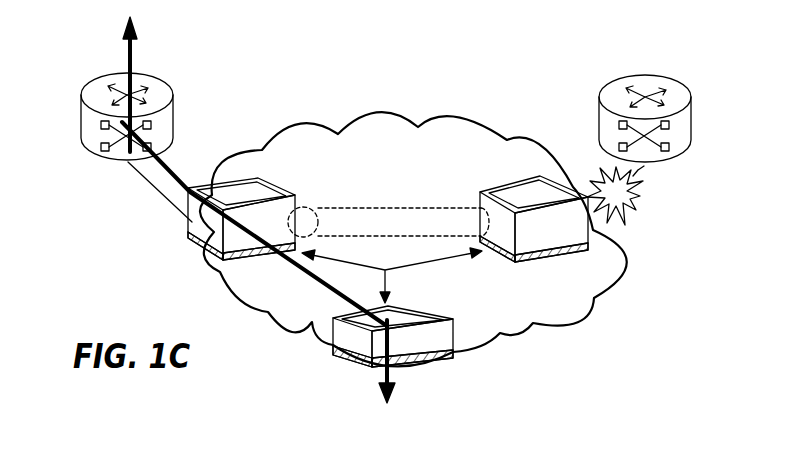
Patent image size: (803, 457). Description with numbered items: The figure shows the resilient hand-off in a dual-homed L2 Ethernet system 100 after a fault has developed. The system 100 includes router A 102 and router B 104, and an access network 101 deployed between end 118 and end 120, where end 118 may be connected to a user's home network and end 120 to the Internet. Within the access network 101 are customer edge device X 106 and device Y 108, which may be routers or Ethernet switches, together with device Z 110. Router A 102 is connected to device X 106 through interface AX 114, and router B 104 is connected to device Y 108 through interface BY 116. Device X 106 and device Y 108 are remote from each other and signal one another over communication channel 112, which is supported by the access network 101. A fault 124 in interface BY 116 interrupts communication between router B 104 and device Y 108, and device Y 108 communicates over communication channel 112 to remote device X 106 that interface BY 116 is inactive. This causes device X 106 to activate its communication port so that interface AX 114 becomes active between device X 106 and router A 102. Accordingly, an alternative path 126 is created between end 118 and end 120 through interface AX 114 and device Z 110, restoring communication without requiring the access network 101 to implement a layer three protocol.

The system 100 is at (320, 41).
The access network 101 is at (378, 113).
The router A 102 is at (81, 112).
The router B 104 is at (692, 118).
The device X 106 is at (197, 254).
The device Y 108 is at (532, 266).
The device Z 110 is at (415, 367).
The communication channel 112 is at (371, 207).
The interface AX 114 is at (153, 190).
The interface BY 116 is at (639, 172).
The end 118 is at (122, 31).
The end 120 is at (383, 392).
The fault 124 is at (627, 216).
The alternative path 126 is at (186, 164).